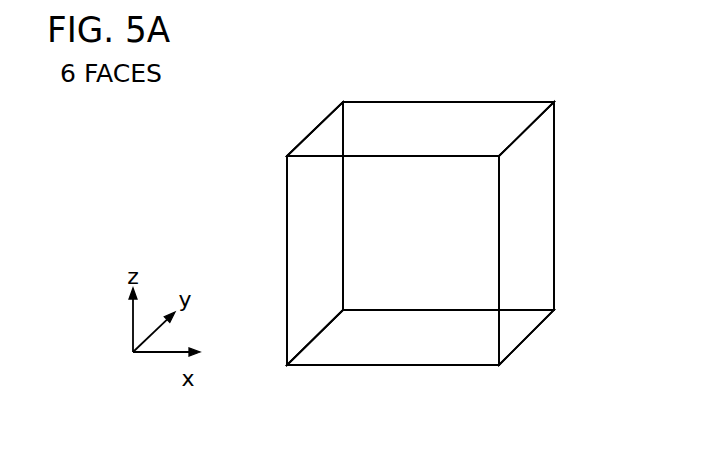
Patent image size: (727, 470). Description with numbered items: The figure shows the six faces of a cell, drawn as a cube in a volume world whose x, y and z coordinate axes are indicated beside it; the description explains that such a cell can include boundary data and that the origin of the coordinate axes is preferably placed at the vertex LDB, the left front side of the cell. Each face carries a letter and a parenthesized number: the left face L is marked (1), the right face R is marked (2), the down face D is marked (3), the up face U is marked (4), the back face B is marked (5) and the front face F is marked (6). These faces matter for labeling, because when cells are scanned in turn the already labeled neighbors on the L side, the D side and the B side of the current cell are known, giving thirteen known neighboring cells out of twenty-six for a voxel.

The left face (L) 1 is at (296, 227).
The right face (R) 2 is at (548, 247).
The down face (D) 3 is at (367, 290).
The up face (U) 4 is at (542, 186).
The back face (B) 5 is at (425, 362).
The front face (F) 6 is at (403, 101).